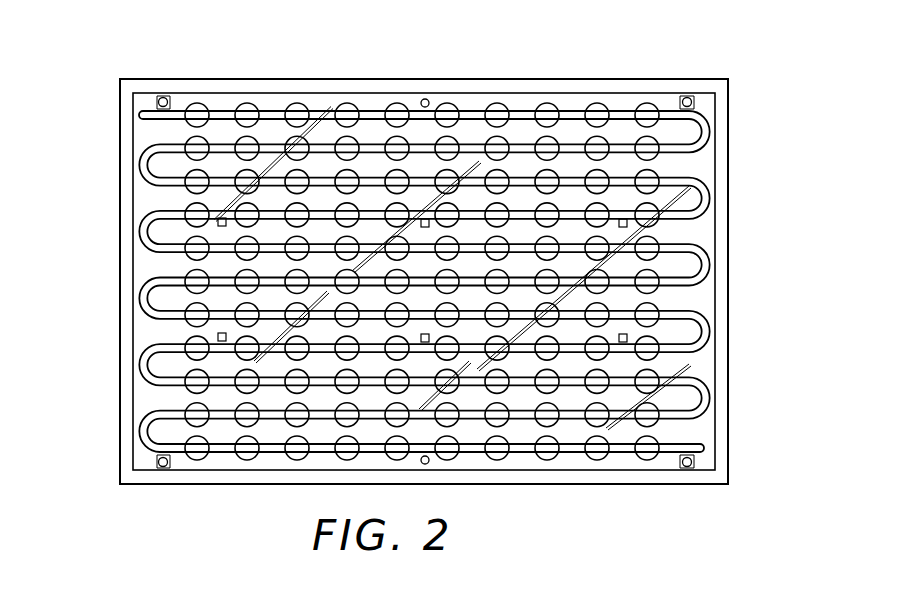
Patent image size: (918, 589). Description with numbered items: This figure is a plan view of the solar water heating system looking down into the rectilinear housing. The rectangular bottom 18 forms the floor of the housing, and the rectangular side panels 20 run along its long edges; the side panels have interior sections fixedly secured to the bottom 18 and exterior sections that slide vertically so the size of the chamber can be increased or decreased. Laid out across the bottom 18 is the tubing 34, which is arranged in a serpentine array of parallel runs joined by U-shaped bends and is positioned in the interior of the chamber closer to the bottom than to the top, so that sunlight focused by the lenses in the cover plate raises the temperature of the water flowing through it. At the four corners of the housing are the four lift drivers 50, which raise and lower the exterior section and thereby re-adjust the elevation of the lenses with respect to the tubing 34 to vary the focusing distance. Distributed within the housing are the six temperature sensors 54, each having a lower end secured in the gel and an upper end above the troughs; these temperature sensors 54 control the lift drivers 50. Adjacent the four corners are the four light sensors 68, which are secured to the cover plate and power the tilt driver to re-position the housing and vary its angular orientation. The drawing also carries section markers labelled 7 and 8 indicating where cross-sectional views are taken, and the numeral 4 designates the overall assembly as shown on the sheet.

The heat exchanger panel 4 is at (424, 242).
The rectangular bottom 18 is at (390, 80).
The rectangular side panels 20 is at (118, 270).
The tubing 34 is at (575, 112).
The lift drivers 50 is at (710, 98).
The temperature sensors 54 is at (224, 217).
The light sensors 68 is at (165, 98).
The section line 7- 7 is at (672, 60).
The section line 8- 8 is at (375, 184).